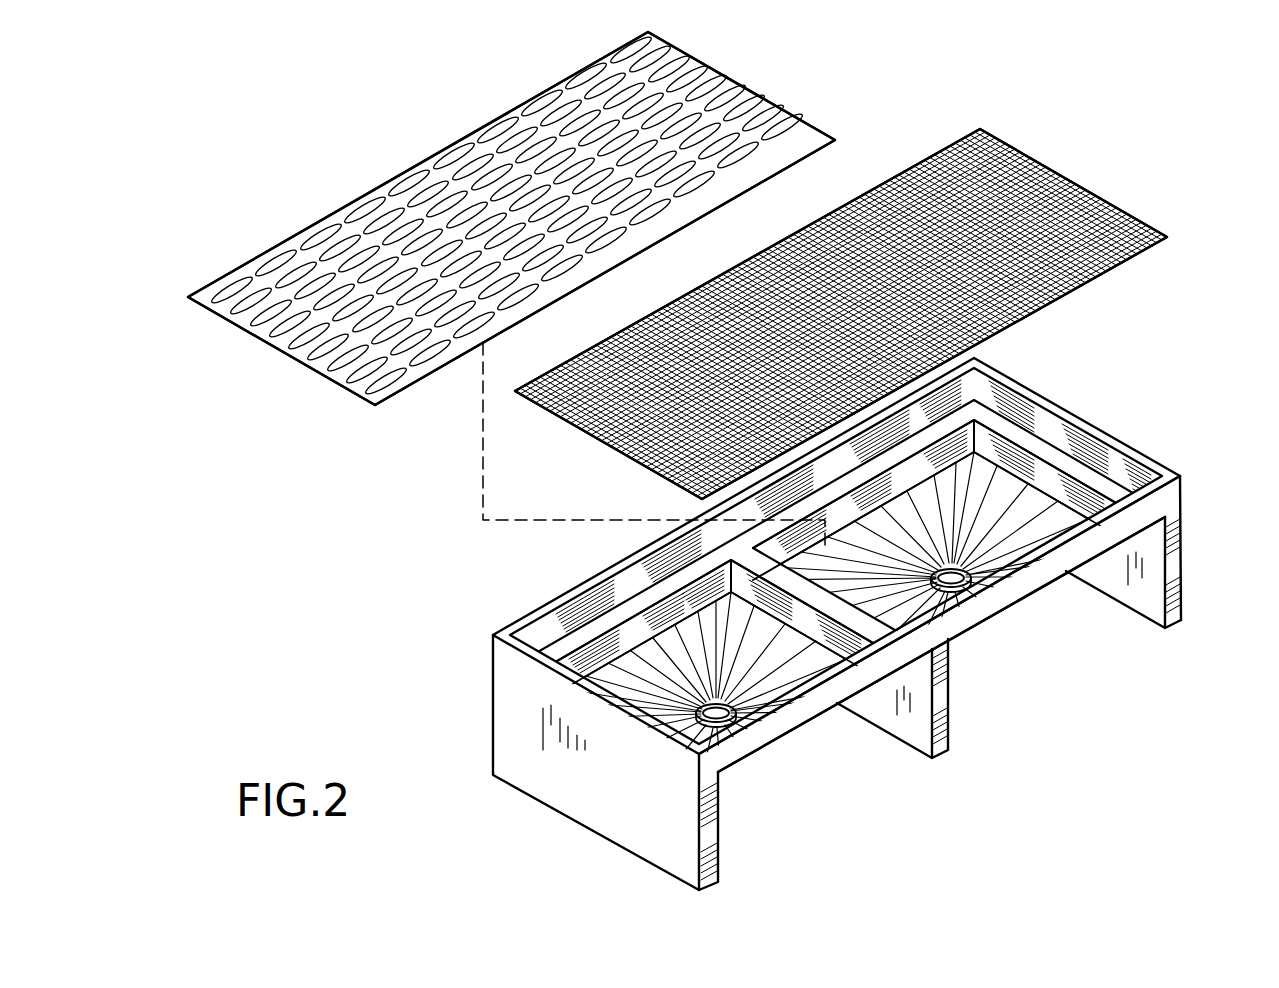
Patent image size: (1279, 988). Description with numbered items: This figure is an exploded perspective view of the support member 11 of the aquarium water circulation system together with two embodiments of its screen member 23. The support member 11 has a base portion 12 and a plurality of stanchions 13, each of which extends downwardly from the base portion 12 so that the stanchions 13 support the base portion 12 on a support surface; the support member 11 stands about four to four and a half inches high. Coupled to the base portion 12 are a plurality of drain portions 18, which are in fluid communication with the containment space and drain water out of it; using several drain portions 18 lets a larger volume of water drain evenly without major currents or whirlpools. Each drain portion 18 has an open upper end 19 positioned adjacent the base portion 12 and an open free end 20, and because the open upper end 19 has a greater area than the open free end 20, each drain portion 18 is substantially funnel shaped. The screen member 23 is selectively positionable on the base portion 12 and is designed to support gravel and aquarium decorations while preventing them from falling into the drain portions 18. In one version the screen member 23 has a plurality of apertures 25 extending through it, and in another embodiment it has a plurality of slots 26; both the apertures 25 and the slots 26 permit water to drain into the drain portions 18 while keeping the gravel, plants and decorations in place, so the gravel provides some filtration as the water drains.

The support member 11 is at (1178, 478).
The base portion 12 is at (1173, 497).
The stanchions 13 is at (693, 850).
The drain portions 18 is at (772, 680).
The open upper end 19 is at (600, 663).
The open free end 20 is at (737, 717).
The screen member 23 is at (375, 405).
The apertures 25 is at (613, 420).
The slots 26 is at (752, 173).